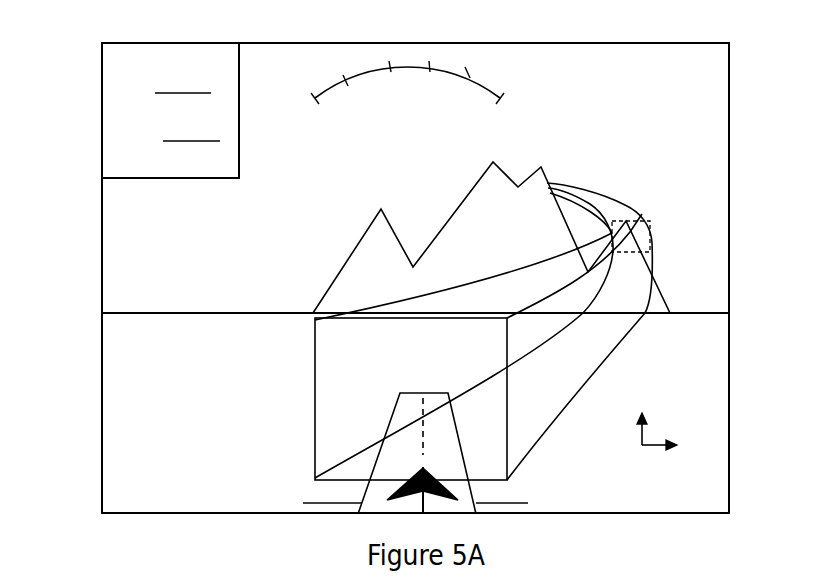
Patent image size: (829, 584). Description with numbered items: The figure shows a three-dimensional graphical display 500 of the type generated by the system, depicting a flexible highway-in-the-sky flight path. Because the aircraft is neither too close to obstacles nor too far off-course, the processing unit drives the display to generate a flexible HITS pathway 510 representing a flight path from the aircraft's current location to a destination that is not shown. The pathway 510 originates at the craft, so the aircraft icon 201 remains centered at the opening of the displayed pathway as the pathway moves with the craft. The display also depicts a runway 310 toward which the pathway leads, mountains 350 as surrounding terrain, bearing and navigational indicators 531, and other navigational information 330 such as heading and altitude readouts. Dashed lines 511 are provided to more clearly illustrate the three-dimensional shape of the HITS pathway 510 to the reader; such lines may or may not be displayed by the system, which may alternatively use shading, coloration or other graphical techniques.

The navigational information 330 is at (100, 117).
The three-dimensional graphical display 500 is at (732, 117).
The mountains 350 is at (443, 227).
The dashed lines 511 is at (632, 225).
The flexible HITS pathway 510 is at (315, 397).
The runway 310 is at (389, 425).
The aircraft icon 201 is at (432, 478).
The bearing and navigational indicators 531 is at (660, 432).